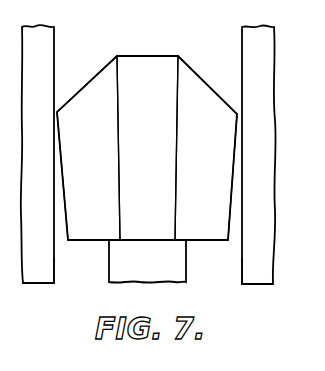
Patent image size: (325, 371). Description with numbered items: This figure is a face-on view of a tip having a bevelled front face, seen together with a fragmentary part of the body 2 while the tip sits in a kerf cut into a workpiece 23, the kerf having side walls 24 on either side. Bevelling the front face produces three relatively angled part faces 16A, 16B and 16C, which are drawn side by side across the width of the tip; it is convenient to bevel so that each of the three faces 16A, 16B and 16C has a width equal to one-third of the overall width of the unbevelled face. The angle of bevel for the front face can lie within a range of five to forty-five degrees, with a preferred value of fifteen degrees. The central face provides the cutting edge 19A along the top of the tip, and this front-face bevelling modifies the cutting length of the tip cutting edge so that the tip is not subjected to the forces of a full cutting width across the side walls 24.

The body 2 is at (152, 269).
The part face 16A is at (104, 163).
The part face 16B is at (162, 163).
The part face 16C is at (218, 163).
The cutting edge 19A is at (146, 56).
The workpiece 23 is at (48, 163).
The side walls 24 is at (55, 258).